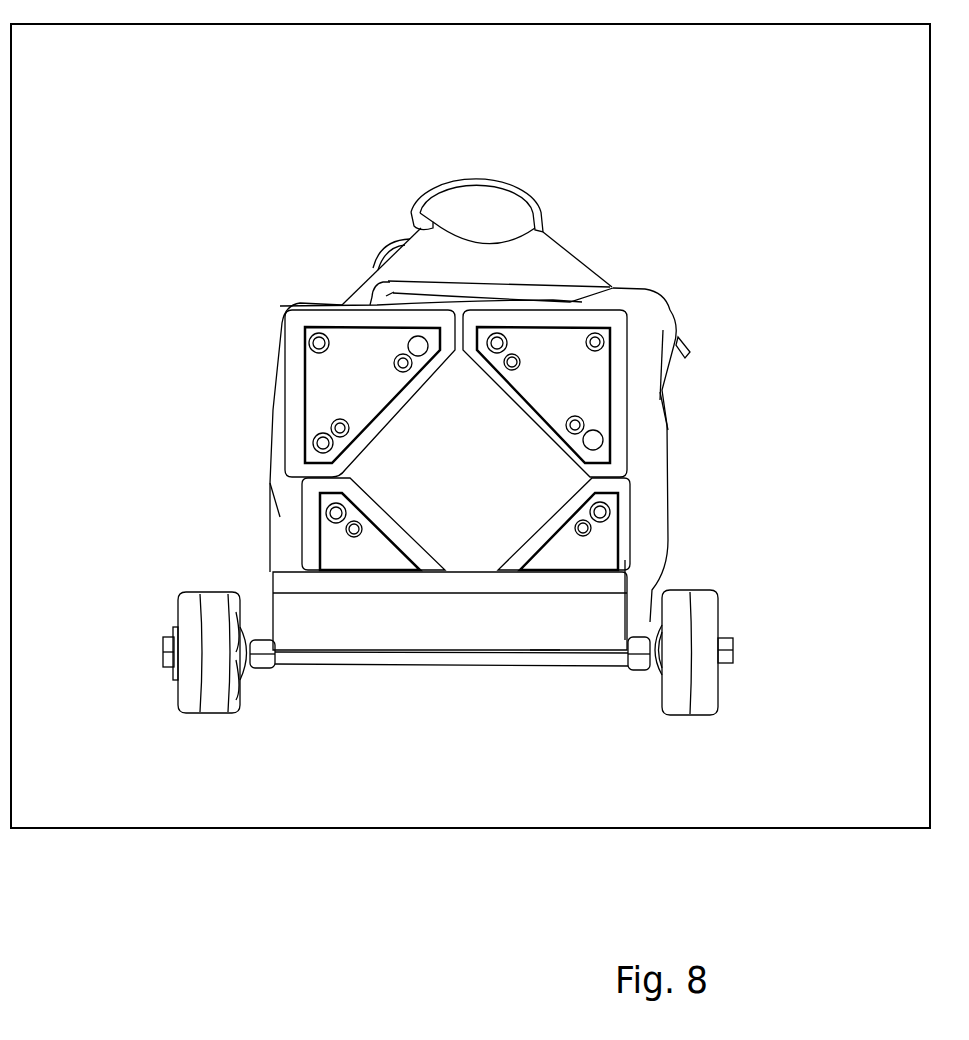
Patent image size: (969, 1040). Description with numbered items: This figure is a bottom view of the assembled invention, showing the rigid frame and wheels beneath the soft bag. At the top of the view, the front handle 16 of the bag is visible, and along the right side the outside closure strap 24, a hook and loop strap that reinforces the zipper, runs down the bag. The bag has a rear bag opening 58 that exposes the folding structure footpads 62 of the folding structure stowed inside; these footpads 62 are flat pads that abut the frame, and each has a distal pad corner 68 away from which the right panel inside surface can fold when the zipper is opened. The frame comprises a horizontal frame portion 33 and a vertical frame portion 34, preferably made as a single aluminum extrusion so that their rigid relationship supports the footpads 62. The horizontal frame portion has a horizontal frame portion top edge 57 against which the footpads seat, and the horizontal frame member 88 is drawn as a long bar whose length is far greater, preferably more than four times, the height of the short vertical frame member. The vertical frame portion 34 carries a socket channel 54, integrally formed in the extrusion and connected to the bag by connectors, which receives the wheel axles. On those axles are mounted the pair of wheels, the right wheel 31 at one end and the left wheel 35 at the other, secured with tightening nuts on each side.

The front handle 16 is at (488, 175).
The folding structure footpads 62 is at (343, 338).
The distal pad corner 68 is at (636, 300).
The outside closure strap 24 is at (678, 320).
The rear bag opening 58 is at (293, 480).
The horizontal frame portion top edge 57 is at (460, 571).
The horizontal frame member 88 is at (450, 611).
The horizontal frame portion 33 is at (322, 632).
The vertical frame portion 34 is at (541, 650).
The socket channel 54 is at (424, 666).
The right wheel 31 is at (697, 618).
The left wheel 35 is at (190, 713).